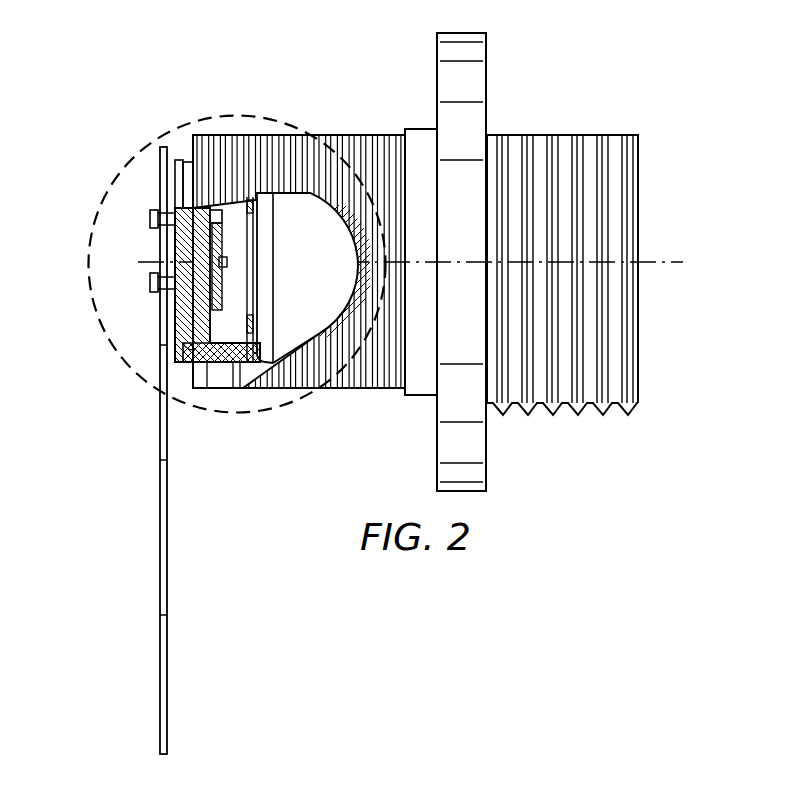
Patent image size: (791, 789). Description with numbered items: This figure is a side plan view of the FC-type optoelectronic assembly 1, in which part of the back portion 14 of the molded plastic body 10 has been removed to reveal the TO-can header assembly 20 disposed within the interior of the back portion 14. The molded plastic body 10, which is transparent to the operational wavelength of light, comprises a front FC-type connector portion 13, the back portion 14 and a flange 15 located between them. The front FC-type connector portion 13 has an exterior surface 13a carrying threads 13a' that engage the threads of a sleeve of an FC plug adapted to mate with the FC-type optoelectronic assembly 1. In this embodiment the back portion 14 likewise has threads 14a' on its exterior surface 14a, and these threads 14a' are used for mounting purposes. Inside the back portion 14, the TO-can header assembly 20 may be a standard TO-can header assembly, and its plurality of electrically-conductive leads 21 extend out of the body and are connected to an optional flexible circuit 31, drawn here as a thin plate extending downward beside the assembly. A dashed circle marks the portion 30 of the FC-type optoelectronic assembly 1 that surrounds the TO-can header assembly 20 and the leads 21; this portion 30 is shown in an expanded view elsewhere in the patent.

The FC-type optoelectronic assembly 1 is at (277, 73).
The molded plastic body 10 is at (640, 298).
The front FC-type connector portion 13 is at (532, 135).
The exterior surface 13a is at (580, 427).
The threads 13a' is at (602, 253).
The back portion 14 is at (230, 136).
The exterior surface 14a is at (352, 412).
The threads 14a' is at (341, 115).
The flange 15 is at (448, 48).
The TO-can header assembly 20 is at (173, 340).
The electrically-conductive leads 21 is at (150, 213).
The portion 30 is at (127, 165).
The flexible circuit 31 is at (168, 583).